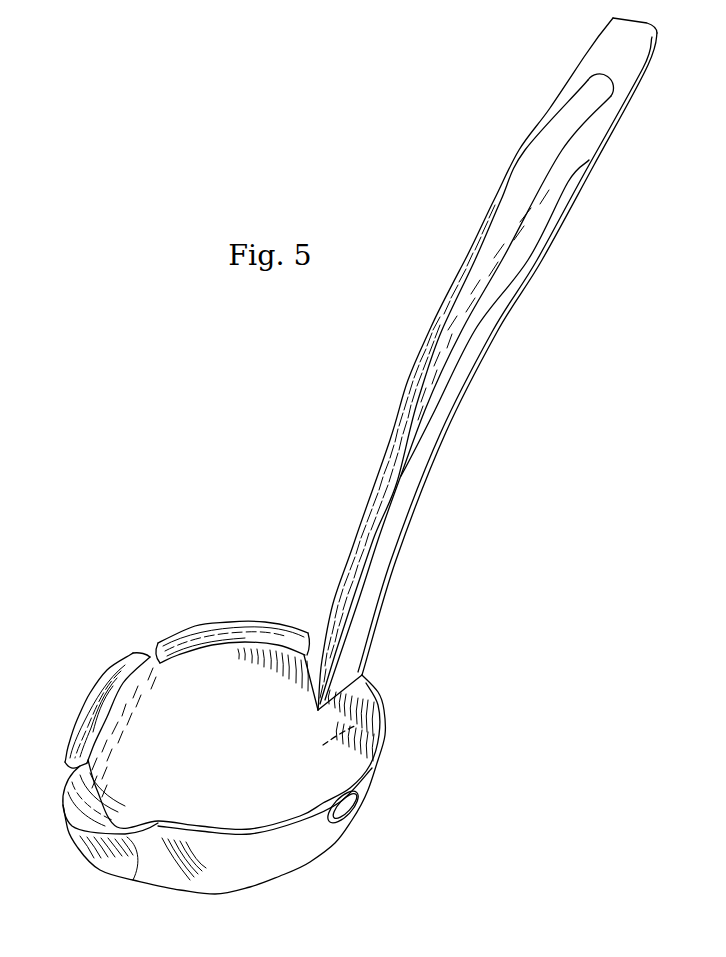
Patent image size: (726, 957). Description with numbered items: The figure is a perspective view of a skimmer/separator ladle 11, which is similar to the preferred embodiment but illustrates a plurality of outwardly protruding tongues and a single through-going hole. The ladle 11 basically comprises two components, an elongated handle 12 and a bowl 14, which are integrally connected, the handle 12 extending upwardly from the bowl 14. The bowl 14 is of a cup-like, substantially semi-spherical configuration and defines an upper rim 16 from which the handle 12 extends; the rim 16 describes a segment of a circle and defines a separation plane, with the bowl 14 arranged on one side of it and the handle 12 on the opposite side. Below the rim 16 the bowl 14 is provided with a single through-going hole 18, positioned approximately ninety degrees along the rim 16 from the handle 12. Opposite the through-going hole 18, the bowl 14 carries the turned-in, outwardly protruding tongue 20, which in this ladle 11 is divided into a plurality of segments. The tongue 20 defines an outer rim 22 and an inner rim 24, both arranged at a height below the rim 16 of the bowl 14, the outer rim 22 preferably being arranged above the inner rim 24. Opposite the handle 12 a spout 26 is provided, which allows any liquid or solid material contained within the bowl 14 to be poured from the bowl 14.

The ladle 11 is at (162, 608).
The handle 12 is at (385, 442).
The bowl 14 is at (387, 700).
The upper rim 16 is at (265, 832).
The through-going hole 18 is at (365, 797).
The turned-in, outwardly protruding tongue 20 is at (270, 637).
The outer rim 22 is at (217, 623).
The inner rim 24 is at (185, 655).
The spout 26 is at (120, 875).